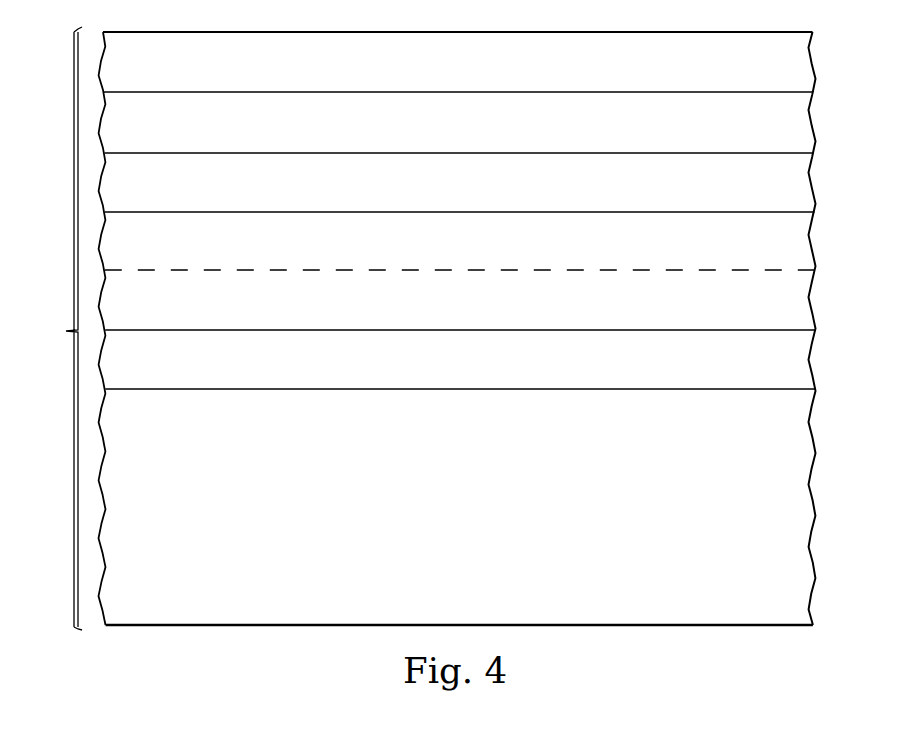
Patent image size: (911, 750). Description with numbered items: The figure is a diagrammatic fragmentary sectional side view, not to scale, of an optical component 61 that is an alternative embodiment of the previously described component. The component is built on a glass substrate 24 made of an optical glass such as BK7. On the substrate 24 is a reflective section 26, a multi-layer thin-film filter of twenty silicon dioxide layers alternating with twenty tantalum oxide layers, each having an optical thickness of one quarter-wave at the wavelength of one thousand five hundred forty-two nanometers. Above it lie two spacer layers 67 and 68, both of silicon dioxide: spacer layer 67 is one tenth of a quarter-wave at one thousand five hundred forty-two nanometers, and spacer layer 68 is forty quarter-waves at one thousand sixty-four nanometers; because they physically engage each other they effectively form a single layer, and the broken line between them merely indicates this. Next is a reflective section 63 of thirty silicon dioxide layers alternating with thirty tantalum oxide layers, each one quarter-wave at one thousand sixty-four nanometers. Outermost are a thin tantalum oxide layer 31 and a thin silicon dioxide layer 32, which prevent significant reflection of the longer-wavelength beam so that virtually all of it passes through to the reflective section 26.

The optical component 61 is at (57, 328).
The layer 32 is at (805, 63).
The layer 31 is at (805, 128).
The reflective section 63 is at (800, 179).
The spacer layer 68 is at (805, 251).
The spacer layer 67 is at (803, 301).
The reflective section 26 is at (805, 356).
The substrate 24 is at (469, 541).